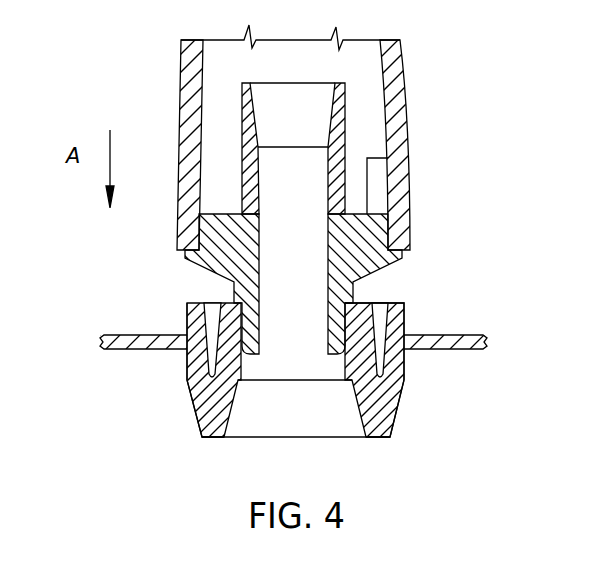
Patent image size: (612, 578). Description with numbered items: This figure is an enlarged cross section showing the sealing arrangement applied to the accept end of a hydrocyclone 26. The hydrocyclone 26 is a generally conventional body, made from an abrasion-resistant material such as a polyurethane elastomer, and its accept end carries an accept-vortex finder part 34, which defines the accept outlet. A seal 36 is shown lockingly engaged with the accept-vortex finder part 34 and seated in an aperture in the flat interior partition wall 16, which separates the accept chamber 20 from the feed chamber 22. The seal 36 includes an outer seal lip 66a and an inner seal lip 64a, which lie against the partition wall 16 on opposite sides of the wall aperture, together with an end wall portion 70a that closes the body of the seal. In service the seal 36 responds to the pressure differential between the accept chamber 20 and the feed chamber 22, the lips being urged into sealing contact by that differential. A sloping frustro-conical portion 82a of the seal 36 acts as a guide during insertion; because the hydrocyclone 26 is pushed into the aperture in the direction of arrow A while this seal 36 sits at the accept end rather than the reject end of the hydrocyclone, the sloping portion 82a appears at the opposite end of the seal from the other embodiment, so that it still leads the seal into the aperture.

The flat interior partition wall 16 is at (440, 349).
The accept chamber 20 is at (553, 410).
The feed chamber 22 is at (552, 243).
The hydrocyclone 26 is at (397, 90).
The accept-vortex finder part 34 is at (383, 268).
The seal 36 is at (404, 404).
The inner seal lip 64a is at (379, 319).
The outer seal lip 66a is at (396, 317).
The end wall portion 70a is at (394, 425).
The sloping frustro-conical portion 82a is at (193, 402).